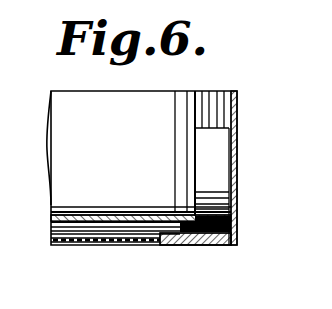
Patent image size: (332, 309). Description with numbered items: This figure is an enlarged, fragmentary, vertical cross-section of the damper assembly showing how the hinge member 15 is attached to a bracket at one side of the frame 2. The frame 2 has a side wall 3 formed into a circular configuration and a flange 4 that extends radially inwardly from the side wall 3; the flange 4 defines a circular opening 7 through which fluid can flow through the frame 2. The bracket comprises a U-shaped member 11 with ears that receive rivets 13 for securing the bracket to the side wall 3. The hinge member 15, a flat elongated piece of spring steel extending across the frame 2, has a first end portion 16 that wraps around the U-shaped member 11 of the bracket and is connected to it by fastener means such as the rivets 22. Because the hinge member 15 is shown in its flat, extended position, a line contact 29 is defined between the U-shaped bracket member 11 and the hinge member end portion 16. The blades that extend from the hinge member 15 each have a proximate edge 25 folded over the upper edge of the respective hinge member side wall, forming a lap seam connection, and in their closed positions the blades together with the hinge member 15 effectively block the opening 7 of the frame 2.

The frame 2 is at (238, 90).
The side wall 3 is at (238, 178).
The flange 4 is at (184, 246).
The circular opening 7 is at (150, 246).
The U-shaped member 11 is at (196, 163).
The rivets 13 is at (238, 141).
The hinge member 15 is at (97, 212).
The first end portion 16 is at (238, 222).
The rivets 22 is at (223, 246).
The proximate edge 25 is at (130, 212).
The line contact 29 is at (175, 212).